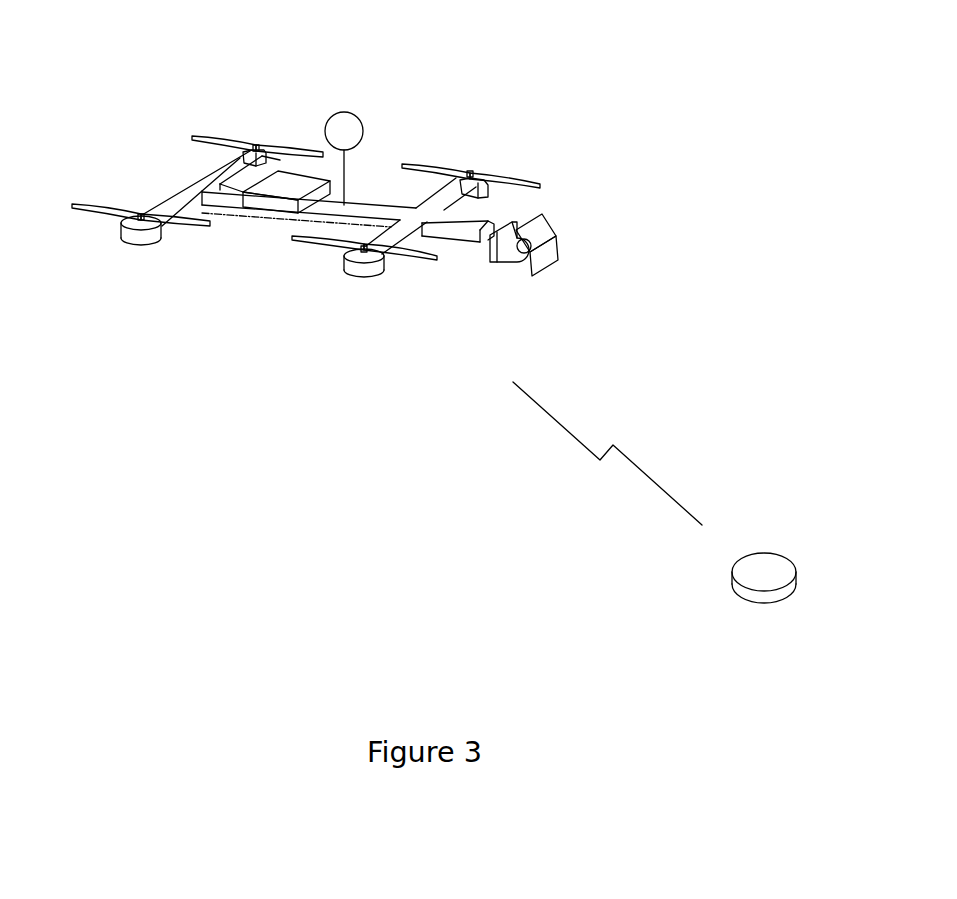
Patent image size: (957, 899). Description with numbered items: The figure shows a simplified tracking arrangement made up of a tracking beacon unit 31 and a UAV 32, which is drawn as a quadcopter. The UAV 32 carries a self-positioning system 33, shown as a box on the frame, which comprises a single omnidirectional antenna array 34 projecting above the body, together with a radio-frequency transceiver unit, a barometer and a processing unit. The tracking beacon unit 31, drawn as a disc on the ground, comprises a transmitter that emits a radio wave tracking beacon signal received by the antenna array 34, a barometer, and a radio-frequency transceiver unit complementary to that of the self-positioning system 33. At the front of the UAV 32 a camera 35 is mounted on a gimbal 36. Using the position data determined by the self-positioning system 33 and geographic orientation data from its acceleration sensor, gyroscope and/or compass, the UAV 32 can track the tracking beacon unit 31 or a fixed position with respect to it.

The tracking beacon unit 31 is at (782, 567).
The UAV 32 is at (192, 183).
The self-positioning system 33 is at (270, 203).
The single omnidirectional antenna array 34 is at (332, 116).
The camera 35 is at (550, 235).
The gimbal 36 is at (493, 258).